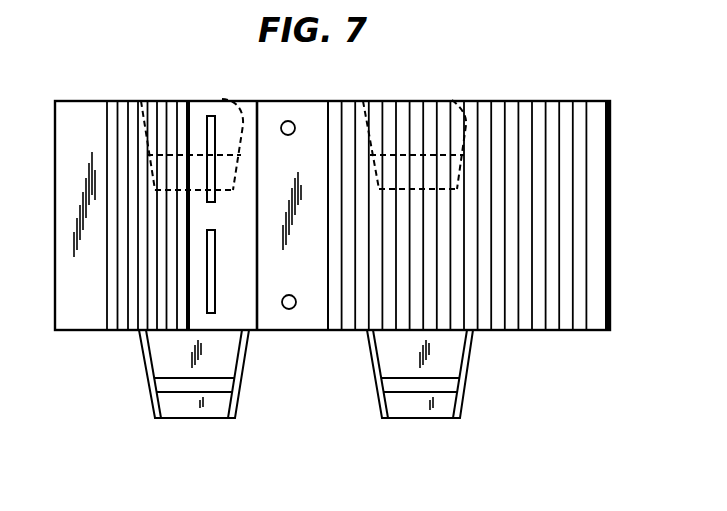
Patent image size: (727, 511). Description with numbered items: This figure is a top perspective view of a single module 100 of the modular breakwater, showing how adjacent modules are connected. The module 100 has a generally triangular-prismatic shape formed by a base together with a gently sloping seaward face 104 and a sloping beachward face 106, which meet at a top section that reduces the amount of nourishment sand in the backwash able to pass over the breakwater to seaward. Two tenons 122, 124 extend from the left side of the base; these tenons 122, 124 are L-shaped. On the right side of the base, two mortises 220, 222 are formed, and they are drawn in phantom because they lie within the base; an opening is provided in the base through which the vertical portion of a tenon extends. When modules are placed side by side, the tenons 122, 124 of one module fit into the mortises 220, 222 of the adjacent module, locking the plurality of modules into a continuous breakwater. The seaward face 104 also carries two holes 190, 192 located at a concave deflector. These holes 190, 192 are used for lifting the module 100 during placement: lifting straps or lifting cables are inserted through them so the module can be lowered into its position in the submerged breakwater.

The module 100 is at (512, 77).
The seaward face 104 is at (527, 330).
The beachward face 106 is at (112, 330).
The tenon 122 is at (193, 417).
The tenon 124 is at (418, 417).
The hole 190 is at (289, 309).
The hole 192 is at (288, 121).
The mortise 220 is at (222, 99).
The mortise 222 is at (452, 100).